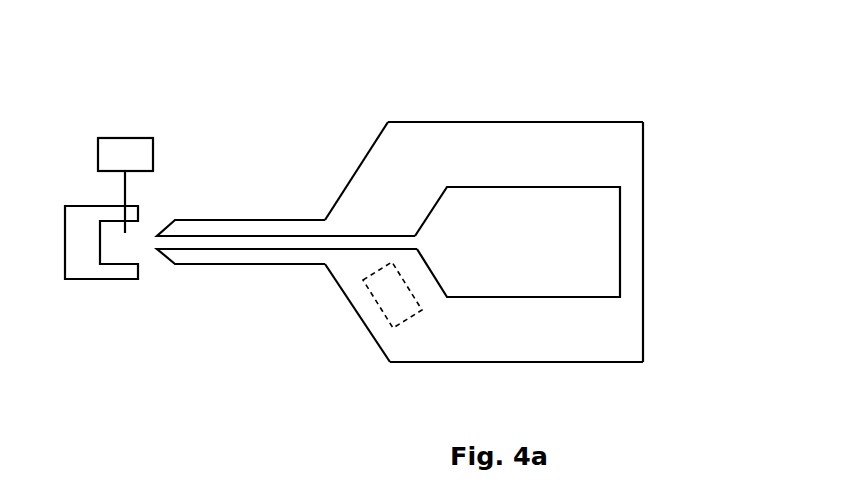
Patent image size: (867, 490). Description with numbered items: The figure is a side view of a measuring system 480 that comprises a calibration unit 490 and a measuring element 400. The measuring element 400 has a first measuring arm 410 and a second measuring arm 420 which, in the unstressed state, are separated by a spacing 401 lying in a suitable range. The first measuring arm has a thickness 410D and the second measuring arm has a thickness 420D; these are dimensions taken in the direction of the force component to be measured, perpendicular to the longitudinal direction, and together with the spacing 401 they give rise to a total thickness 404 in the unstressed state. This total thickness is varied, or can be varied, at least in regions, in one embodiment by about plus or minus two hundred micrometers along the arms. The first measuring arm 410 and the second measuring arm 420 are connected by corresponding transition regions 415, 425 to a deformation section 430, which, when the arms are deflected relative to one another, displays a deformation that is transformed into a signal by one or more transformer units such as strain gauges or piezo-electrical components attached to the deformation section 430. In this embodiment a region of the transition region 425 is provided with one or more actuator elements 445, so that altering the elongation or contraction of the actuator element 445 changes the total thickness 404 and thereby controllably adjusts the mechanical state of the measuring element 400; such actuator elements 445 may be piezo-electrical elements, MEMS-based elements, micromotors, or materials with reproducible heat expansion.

The measuring element 400 is at (590, 95).
The spacing 401 is at (217, 242).
The total thickness 404 is at (202, 307).
The first measuring arm 410 is at (233, 220).
The thickness of the first measuring arm 410D is at (308, 278).
The transition region 415 is at (368, 163).
The second measuring arm 420 is at (186, 267).
The thickness of the second measuring arm 420D is at (253, 208).
The transition region 425 is at (368, 312).
The deformation section 430 is at (645, 222).
The actuator element 445 is at (403, 317).
The measuring system 480 is at (493, 72).
The calibration unit 490 is at (79, 185).